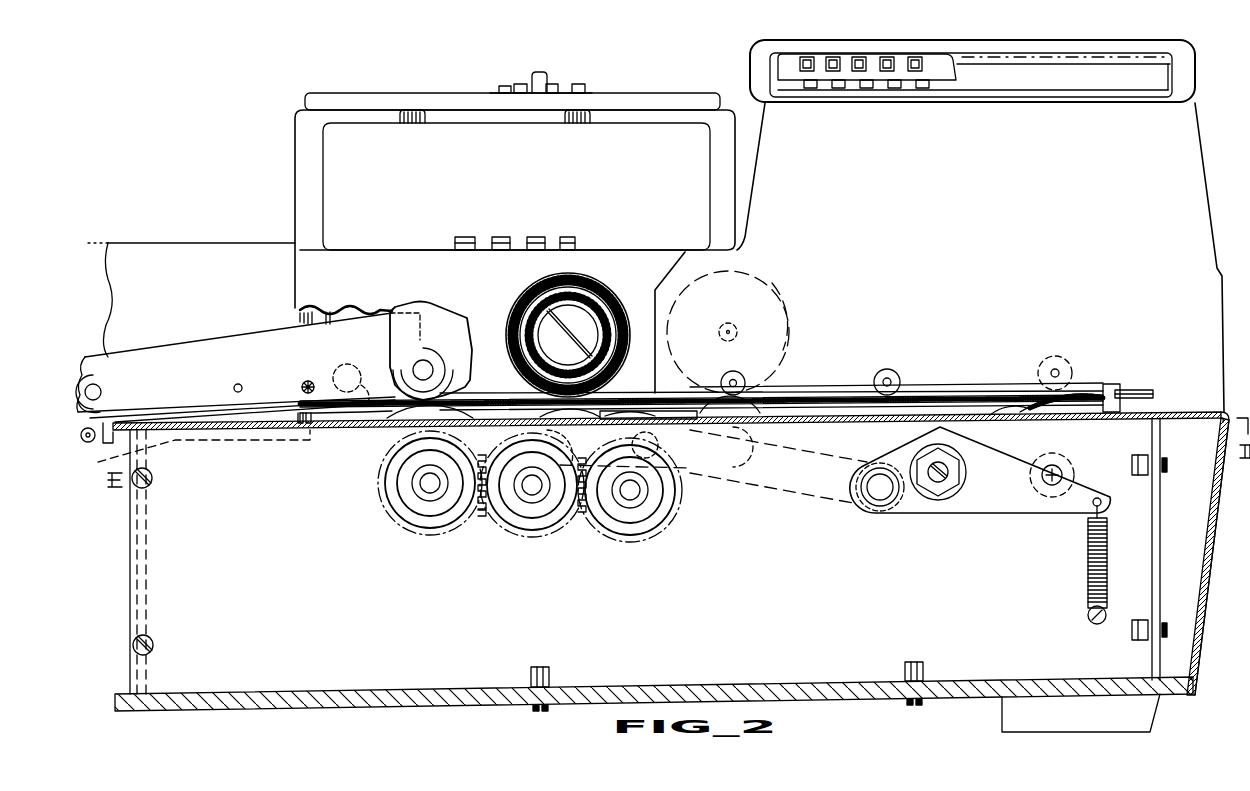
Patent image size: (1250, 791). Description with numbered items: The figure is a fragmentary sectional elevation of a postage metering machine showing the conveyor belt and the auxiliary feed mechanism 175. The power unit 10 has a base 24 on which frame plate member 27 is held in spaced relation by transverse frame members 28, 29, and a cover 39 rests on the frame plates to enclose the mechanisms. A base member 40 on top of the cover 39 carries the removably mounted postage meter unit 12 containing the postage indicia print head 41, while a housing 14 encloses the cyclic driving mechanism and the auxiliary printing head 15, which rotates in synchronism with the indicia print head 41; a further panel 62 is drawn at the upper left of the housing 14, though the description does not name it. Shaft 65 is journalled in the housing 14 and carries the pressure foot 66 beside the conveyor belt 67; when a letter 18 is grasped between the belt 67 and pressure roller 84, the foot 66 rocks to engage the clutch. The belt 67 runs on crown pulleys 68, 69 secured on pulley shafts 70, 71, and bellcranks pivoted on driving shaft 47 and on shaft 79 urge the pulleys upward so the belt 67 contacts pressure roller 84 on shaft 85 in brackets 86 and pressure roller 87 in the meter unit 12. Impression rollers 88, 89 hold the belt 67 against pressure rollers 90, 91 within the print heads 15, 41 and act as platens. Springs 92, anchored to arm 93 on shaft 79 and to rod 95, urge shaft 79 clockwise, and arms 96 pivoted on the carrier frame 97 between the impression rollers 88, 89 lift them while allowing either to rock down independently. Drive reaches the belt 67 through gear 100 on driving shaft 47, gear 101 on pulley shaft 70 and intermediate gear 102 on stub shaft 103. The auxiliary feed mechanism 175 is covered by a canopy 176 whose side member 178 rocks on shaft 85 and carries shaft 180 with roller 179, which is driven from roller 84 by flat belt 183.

The power unit 10 is at (1205, 406).
The postage meter unit 12 is at (1203, 184).
The housing 14 is at (303, 176).
The auxiliary printing head 15 is at (615, 295).
The letter 18 is at (323, 417).
The base 24 is at (843, 690).
The frame plate member 27 is at (882, 584).
The transverse frame member 28 is at (1158, 598).
The transverse frame member 29 is at (146, 576).
The cover 39 is at (1212, 503).
The base member 40 is at (1154, 393).
The postage indicia print head 41 is at (780, 367).
The driving shaft 47 is at (637, 493).
The upper panel 62 is at (221, 247).
The shaft 65 is at (349, 364).
The pressure foot 66 is at (367, 385).
The conveyor belt 67 is at (960, 393).
The crown pulley 68 is at (410, 414).
The crown pulley 69 is at (1060, 407).
The pulley shaft 70 is at (427, 487).
The pulley shaft 71 is at (1040, 476).
The shaft 79 is at (881, 499).
The pressure roller 84 is at (455, 388).
The shaft 85 is at (428, 369).
The bracket 86 is at (445, 325).
The pressure roller 87 is at (1070, 368).
The impression roller 88 is at (569, 412).
The impression roller 89 is at (745, 413).
The pressure roller 90 is at (573, 369).
The pressure roller 91 is at (745, 376).
The spring 92 is at (1088, 563).
The arm 93 is at (980, 500).
The rod 95 is at (1092, 619).
The arm 96 is at (788, 494).
The carrier frame 97 is at (655, 411).
The gear 100 is at (586, 514).
The gear 101 is at (478, 512).
The intermediate gear 102 is at (487, 512).
The stub shaft 103 is at (535, 493).
The auxiliary feed mechanism 175 is at (187, 333).
The canopy 176 is at (279, 340).
The side member 178 is at (184, 374).
The roller 179 is at (103, 410).
The shaft 180 is at (100, 388).
The flat belt 183 is at (265, 406).